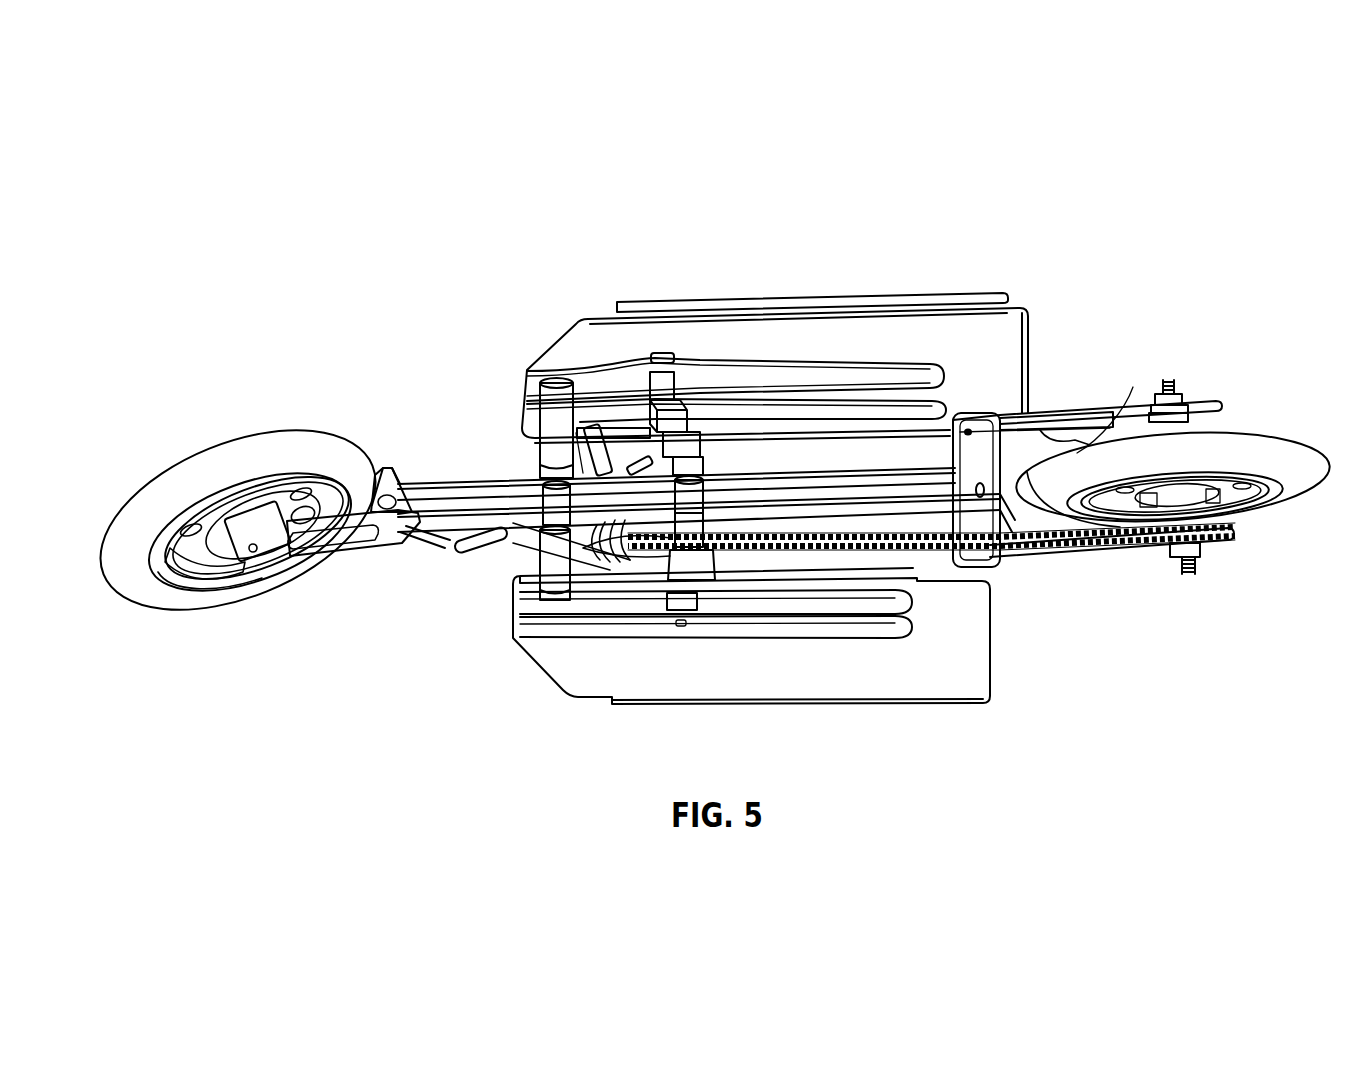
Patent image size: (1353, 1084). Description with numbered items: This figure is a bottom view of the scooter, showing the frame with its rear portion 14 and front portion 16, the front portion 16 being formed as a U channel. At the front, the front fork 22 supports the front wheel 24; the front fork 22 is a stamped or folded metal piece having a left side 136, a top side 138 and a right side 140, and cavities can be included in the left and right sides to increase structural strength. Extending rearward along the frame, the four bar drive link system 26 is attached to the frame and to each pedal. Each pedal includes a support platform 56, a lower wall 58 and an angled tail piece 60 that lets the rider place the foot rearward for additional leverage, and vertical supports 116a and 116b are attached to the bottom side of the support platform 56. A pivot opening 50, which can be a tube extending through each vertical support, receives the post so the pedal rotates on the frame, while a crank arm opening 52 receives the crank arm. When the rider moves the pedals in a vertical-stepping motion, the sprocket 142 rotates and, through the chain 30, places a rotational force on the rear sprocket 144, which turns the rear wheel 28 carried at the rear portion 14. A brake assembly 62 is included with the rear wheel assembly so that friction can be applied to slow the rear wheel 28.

The rear portion 14 is at (1093, 407).
The front portion 16 is at (475, 536).
The front fork 22 is at (376, 557).
The front wheel 24 is at (200, 610).
The four bar drive link system 26 is at (719, 465).
The rear wheel 28 is at (1247, 447).
The chain 30 is at (1023, 551).
The pivot opening 50 is at (545, 447).
The crank arm opening 52 is at (660, 366).
The support platform 56 is at (845, 325).
The lower wall 58 is at (955, 293).
The tail piece 60 is at (1038, 322).
The brake assembly 62 is at (1222, 403).
The vertical support 116a is at (866, 397).
The vertical support 116b is at (777, 366).
The left side 136 is at (380, 467).
The top side 138 is at (397, 470).
The right side 140 is at (386, 557).
The sprocket 142 is at (664, 556).
The rear sprocket 144 is at (1218, 520).